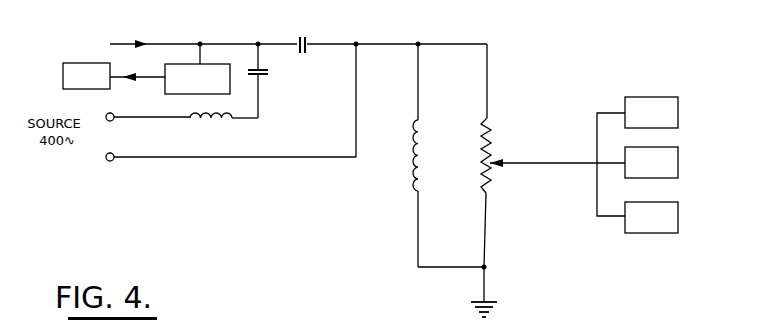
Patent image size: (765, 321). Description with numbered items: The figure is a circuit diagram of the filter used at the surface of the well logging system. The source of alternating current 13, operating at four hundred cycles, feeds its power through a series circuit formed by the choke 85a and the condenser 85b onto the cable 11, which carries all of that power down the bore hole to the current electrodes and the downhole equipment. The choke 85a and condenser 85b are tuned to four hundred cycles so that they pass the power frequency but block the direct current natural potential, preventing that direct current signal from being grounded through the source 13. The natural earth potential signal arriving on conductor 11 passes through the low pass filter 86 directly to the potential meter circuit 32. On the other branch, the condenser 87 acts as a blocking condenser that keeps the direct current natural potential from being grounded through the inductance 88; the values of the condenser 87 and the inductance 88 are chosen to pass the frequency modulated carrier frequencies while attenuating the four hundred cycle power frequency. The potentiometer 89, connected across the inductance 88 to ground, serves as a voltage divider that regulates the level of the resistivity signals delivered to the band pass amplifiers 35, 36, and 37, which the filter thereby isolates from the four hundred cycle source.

The cable 11 is at (131, 44).
The potential meter circuit 32 is at (114, 76).
The low pass filter 86 is at (164, 94).
The source of alternating current 13 is at (112, 121).
The choke 85a is at (224, 122).
The condenser 85b is at (266, 76).
The condenser 87 is at (310, 42).
The inductance 88 is at (412, 162).
The potentiometer 89 is at (492, 148).
The band pass amplifier 35 is at (637, 156).
The band pass amplifier 36 is at (584, 162).
The band pass amplifier 37 is at (651, 217).